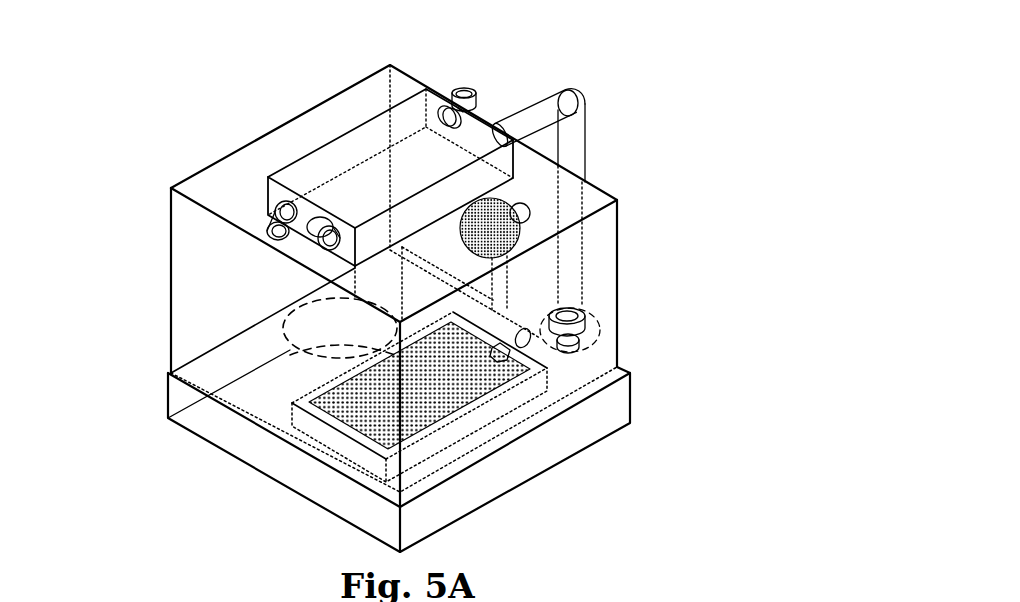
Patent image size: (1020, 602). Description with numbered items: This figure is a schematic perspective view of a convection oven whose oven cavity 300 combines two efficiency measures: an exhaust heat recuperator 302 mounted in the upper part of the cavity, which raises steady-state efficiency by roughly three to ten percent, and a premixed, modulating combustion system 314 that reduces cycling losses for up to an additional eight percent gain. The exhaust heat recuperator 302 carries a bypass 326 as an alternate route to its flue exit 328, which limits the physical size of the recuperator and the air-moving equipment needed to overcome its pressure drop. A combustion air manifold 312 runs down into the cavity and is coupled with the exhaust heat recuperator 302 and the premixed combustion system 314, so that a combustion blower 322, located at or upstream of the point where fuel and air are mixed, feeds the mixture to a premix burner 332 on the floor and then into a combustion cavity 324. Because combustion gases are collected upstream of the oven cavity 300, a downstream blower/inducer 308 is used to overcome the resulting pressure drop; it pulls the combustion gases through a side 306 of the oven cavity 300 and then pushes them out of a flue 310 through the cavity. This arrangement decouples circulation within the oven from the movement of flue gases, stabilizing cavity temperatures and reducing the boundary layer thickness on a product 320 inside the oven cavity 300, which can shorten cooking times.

The oven cavity 300 is at (198, 338).
The exhaust heat recuperator 302 is at (402, 122).
The side 306 is at (593, 268).
The downstream blower/inducer 308 is at (518, 195).
The flue 310 is at (483, 107).
The combustion air manifold 312 is at (570, 147).
The premixed combustion system 314 is at (607, 327).
The product 320 is at (327, 340).
The combustion blower 322 is at (577, 310).
The combustion cavity 324 is at (350, 445).
The bypass 326 is at (293, 242).
The flue exit 328 is at (470, 86).
The premix burner 332 is at (440, 392).